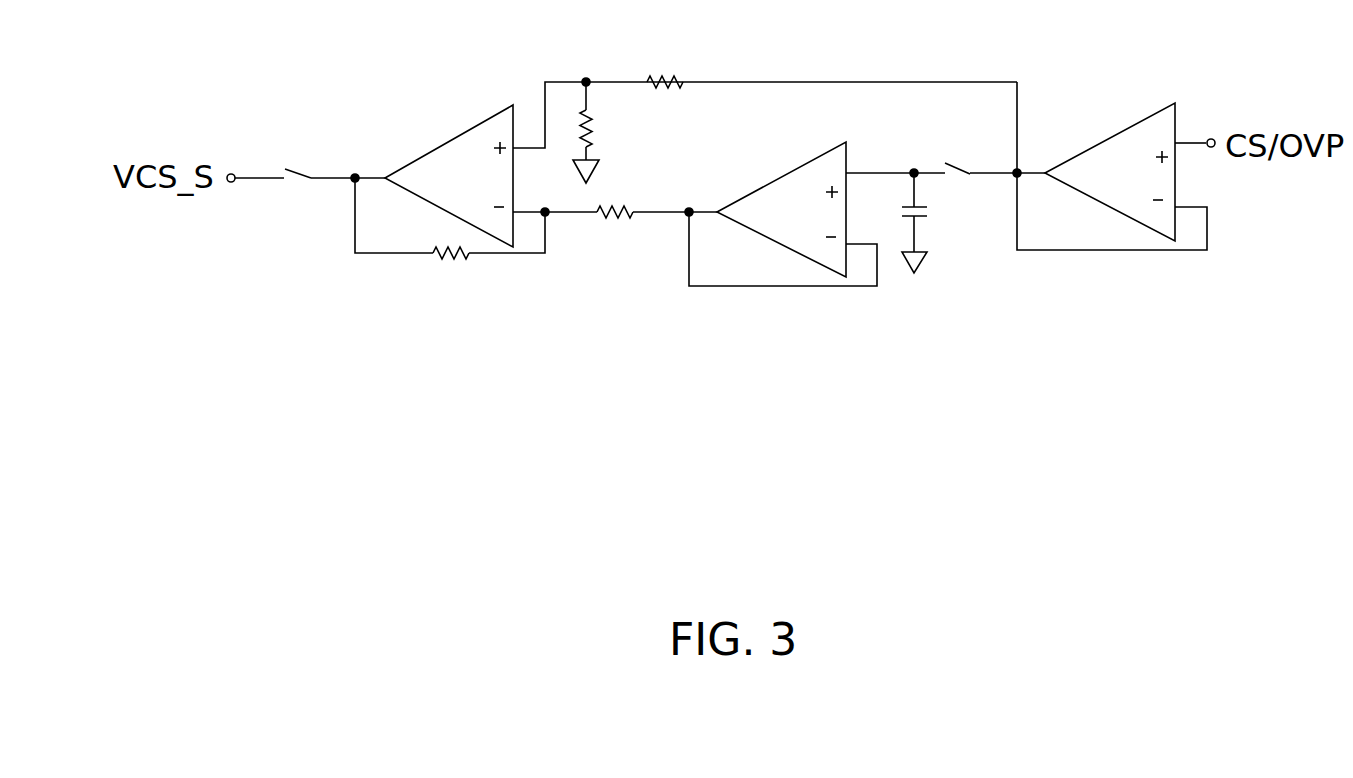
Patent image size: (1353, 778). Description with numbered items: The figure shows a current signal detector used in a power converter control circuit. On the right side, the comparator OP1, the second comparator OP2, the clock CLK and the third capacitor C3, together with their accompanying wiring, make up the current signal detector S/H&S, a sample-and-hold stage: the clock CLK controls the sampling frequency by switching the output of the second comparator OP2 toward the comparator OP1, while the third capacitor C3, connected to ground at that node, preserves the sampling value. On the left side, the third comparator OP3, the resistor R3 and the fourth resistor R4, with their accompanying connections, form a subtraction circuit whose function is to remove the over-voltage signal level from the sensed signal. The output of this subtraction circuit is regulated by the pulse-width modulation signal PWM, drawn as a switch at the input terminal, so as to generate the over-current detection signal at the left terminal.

The comparator OP1 is at (1116, 166).
The second comparator OP2 is at (783, 214).
The third comparator OP3 is at (449, 176).
The resistor R3 is at (642, 145).
The fourth resistor R4 is at (496, 194).
The third capacitor C3 is at (937, 223).
The pulse-width modulation signal PWM is at (306, 155).
The clock CLK is at (981, 148).